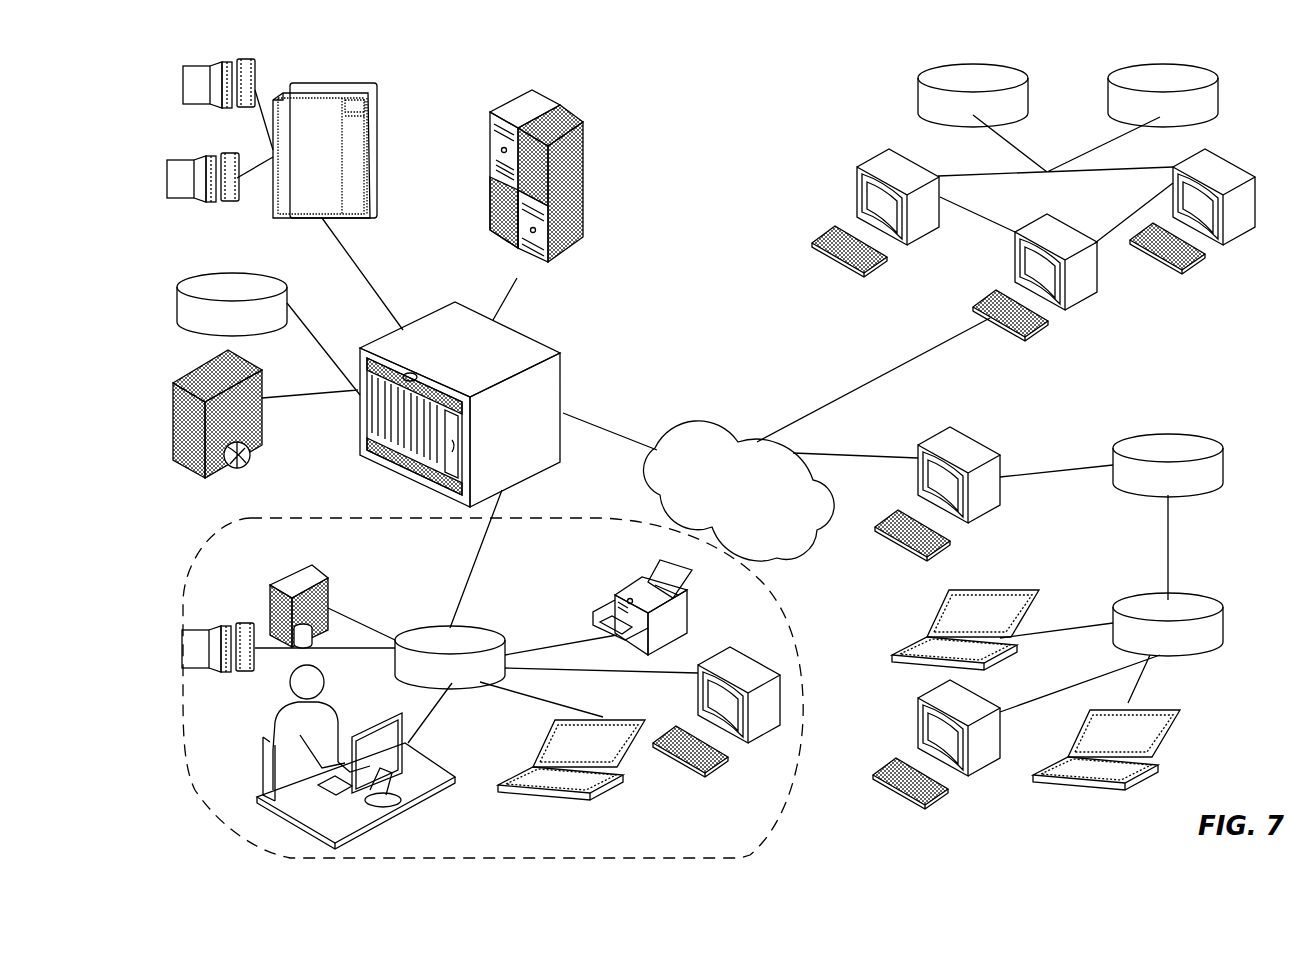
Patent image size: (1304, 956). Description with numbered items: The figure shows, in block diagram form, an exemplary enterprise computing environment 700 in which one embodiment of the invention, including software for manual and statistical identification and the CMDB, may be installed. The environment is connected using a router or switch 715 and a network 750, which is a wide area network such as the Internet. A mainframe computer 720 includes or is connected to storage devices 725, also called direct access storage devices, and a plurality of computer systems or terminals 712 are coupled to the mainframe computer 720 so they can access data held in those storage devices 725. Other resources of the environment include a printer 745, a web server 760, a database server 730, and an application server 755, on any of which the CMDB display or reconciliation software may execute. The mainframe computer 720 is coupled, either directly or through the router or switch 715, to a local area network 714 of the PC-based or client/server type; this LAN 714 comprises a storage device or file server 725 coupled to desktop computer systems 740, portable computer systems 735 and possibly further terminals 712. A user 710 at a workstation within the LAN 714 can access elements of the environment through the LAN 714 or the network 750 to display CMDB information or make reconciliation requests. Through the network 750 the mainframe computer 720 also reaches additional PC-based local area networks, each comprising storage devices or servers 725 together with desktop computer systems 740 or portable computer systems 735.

The enterprise computing environment 700 is at (727, 128).
The user 710 is at (270, 745).
The computer systems or terminals 712 is at (200, 104).
The local area network 714 is at (392, 858).
The router or switch 715 is at (560, 355).
The mainframe computer 720 is at (377, 150).
The storage device 725 is at (232, 282).
The database server 730 is at (298, 567).
The portable computer system 735 is at (588, 795).
The desktop computer system 740 is at (863, 272).
The printer 745 is at (690, 612).
The network 750 is at (675, 423).
The application server 755 is at (582, 178).
The web server 760 is at (255, 447).